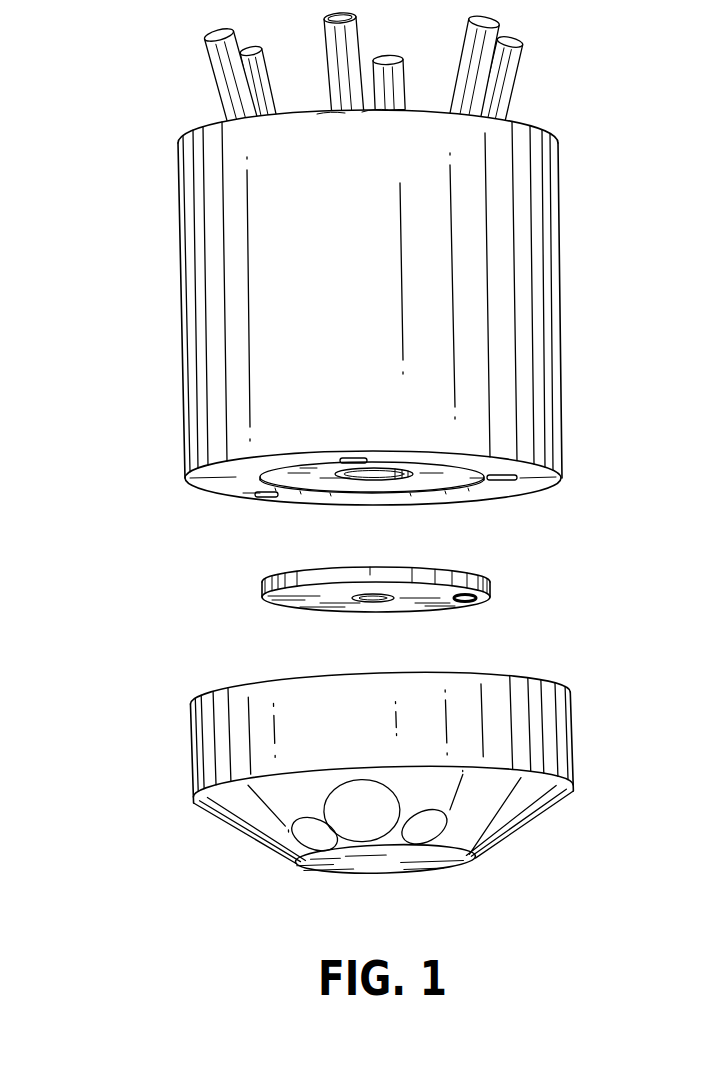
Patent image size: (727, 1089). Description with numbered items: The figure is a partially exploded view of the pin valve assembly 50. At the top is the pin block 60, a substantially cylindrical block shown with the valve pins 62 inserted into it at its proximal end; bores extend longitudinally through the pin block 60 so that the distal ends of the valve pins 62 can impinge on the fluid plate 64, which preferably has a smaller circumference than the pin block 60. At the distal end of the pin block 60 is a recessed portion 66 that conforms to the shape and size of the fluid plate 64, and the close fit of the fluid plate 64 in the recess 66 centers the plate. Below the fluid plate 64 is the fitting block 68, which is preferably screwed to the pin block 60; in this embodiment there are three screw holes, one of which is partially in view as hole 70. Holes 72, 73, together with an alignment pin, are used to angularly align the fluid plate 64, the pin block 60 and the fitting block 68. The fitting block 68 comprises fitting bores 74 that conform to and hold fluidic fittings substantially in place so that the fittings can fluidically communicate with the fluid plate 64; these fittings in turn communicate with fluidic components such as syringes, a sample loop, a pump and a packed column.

The pin valve assembly 50 is at (98, 134).
The pin block 60 is at (200, 285).
The valve pins 62 is at (216, 42).
The fluid plate 64 is at (262, 588).
The recessed portion 66 is at (442, 488).
The fitting block 68 is at (205, 743).
The screw hole 70 is at (353, 458).
The alignment hole 72 is at (482, 597).
The alignment hole 73 is at (460, 477).
The fitting bores 74 is at (305, 833).